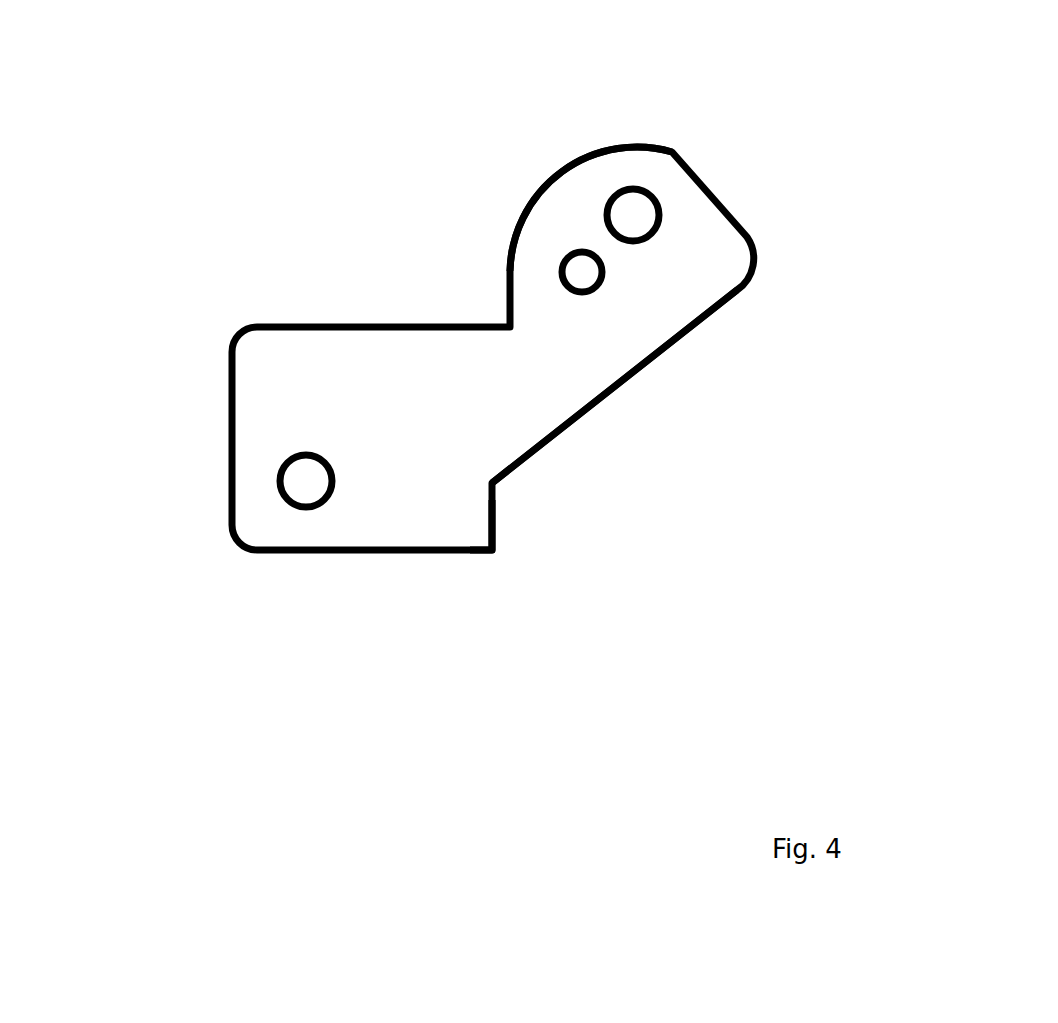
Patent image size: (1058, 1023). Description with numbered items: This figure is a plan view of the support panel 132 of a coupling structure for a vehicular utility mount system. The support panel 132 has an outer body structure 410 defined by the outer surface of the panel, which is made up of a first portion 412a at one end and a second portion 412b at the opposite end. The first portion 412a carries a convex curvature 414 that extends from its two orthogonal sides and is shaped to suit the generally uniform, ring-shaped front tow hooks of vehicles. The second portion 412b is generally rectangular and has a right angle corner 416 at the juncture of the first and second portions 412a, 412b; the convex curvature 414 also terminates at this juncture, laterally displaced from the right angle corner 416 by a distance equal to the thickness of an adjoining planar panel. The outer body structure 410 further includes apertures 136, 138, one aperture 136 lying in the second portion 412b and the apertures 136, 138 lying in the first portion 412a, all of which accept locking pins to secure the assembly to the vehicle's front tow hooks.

The support panel 132 is at (238, 750).
The aperture 136 is at (648, 193).
The aperture 138 is at (562, 270).
The outer body structure 410 is at (620, 388).
The first portion 412a is at (693, 248).
The second portion 412b is at (352, 412).
The convex curvature 414 is at (552, 183).
The right angle corner 416 is at (498, 562).